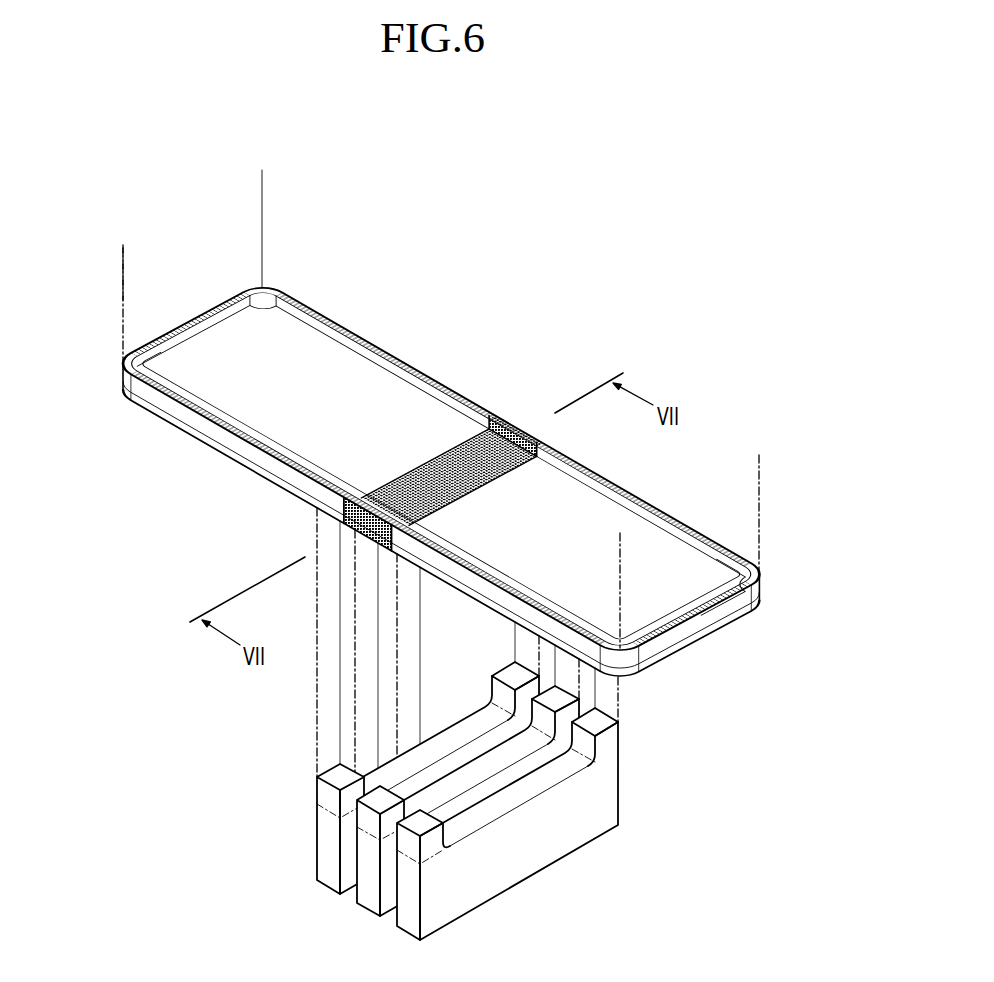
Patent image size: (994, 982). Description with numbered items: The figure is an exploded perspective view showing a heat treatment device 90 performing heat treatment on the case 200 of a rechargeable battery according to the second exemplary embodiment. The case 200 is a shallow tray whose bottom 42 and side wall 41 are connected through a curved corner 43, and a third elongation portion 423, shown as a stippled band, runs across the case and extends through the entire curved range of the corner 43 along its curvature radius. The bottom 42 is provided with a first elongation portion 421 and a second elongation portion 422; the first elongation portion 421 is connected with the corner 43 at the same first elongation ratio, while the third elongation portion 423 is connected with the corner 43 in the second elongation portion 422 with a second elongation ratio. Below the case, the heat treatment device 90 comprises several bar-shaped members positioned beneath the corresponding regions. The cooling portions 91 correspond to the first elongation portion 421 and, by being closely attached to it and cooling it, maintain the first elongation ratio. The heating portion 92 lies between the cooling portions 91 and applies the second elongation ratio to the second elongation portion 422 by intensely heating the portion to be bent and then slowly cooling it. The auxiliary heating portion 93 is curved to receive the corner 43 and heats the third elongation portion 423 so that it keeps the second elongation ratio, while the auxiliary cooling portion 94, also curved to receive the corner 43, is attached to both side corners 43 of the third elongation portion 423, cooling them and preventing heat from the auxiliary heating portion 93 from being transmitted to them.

The display device 200 is at (116, 281).
The side wall 41 is at (682, 527).
The bottom 42 is at (245, 362).
The curved corner 43 is at (428, 403).
The first elongation portion 421 is at (273, 418).
The second elongation portion 422 is at (418, 490).
The third elongation portion 423 is at (484, 433).
The heat treatment device 90 is at (447, 724).
The cooling portion 91 is at (385, 778).
The heating portion 92 is at (415, 813).
The auxiliary heating portion 93 is at (372, 802).
The auxiliary cooling portion 94 is at (333, 773).